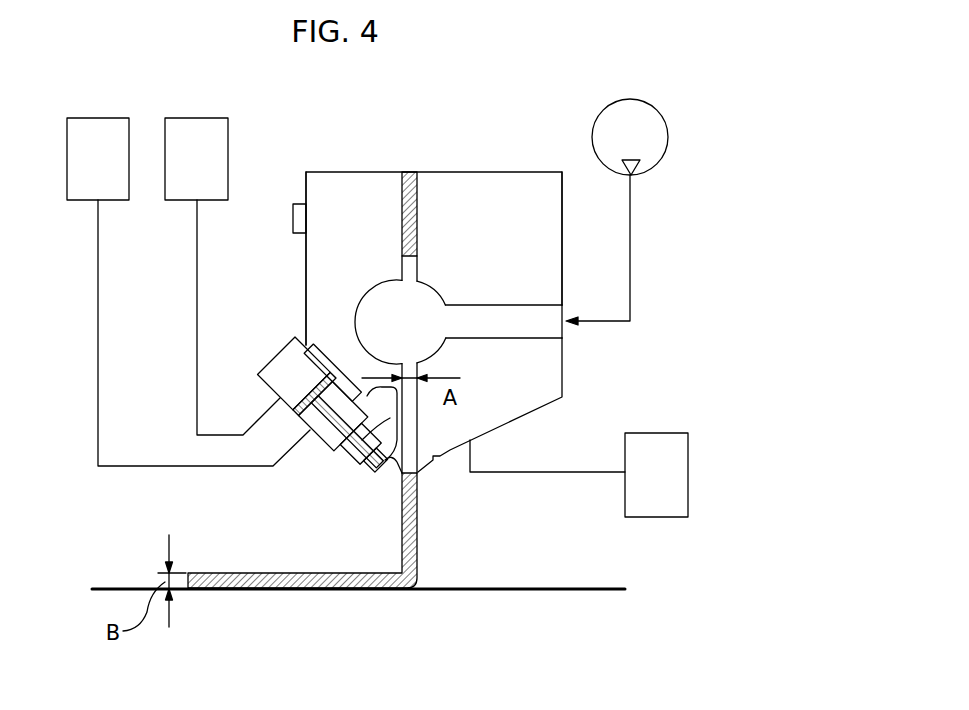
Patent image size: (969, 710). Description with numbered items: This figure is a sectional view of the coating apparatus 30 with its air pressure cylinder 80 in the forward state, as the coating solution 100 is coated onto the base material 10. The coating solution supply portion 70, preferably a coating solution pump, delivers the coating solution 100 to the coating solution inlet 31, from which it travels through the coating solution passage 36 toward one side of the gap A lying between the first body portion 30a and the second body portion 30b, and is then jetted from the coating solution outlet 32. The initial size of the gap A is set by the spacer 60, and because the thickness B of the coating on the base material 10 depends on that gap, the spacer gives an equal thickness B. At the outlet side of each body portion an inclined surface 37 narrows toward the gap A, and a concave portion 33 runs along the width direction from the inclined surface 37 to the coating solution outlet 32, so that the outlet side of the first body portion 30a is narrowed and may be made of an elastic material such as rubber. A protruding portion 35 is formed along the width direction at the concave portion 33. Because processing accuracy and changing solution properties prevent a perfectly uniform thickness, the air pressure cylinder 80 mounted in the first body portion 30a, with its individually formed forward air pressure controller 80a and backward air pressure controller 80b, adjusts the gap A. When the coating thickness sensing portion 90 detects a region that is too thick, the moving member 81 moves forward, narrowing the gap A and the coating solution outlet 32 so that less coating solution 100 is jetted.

The base material 10 is at (497, 590).
The coating solution 100 is at (338, 589).
The coating apparatus 30 is at (378, 70).
The first body portion 30a is at (370, 178).
The second body portion 30b is at (457, 178).
The coating solution inlet 31 is at (562, 328).
The coating solution outlet 32 is at (417, 497).
The concave portion 33 is at (352, 452).
The protruding portion 35 is at (392, 462).
The coating solution passage 36 is at (480, 323).
The inclined surface 37 is at (338, 362).
The spacer 60 is at (408, 173).
The coating solution supply portion 70 is at (661, 140).
The air pressure cylinder 80 is at (278, 363).
The forward air pressure controller 80a is at (199, 128).
The backward air pressure controller 80b is at (90, 128).
The moving member 81 is at (368, 463).
The coating thickness sensing portion 90 is at (688, 471).